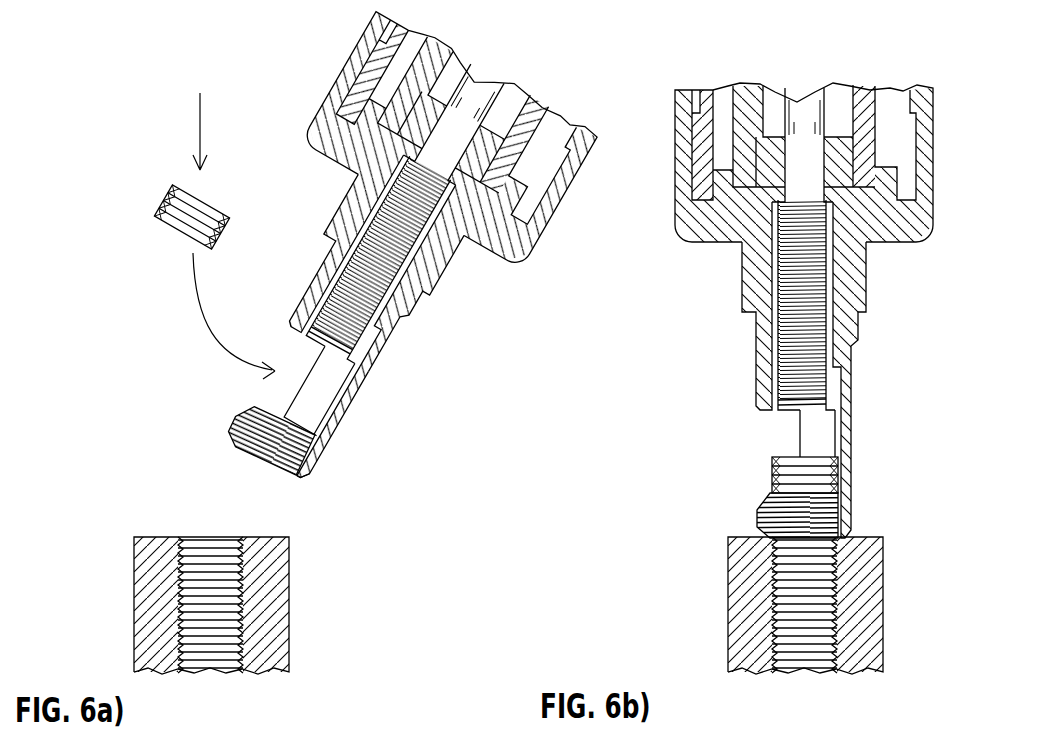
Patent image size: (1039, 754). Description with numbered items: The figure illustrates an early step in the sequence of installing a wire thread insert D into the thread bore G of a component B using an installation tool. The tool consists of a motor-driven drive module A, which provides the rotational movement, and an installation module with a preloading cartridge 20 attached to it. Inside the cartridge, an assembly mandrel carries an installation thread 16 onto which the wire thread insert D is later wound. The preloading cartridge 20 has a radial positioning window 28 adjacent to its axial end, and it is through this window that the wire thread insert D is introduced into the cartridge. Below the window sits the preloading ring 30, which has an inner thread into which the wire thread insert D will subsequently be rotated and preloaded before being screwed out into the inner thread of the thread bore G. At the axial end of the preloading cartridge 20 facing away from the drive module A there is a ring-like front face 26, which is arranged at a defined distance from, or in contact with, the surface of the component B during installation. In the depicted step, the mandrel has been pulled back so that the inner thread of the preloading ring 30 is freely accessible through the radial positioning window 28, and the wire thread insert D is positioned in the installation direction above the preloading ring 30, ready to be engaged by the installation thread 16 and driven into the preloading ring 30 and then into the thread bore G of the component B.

In FIG. 6a, the drive module A is at (560, 187).
In FIG. 6b, the drive module A is at (685, 170).
In FIG. 6a, the preloading cartridge 20 is at (430, 262).
In FIG. 6b, the preloading cartridge 20 is at (748, 293).
In FIG. 6b, the installation thread 16 is at (783, 330).
In FIG. 6a, the radial positioning window 28 is at (283, 390).
In FIG. 6b, the radial positioning window 28 is at (797, 433).
In FIG. 6a, the wire thread insert D is at (163, 205).
In FIG. 6b, the wire thread insert D is at (775, 465).
In FIG. 6a, the preloading ring 30 is at (230, 420).
In FIG. 6b, the preloading ring 30 is at (760, 510).
In FIG. 6a, the front face 26 is at (283, 471).
In FIG. 6a, the component B is at (270, 568).
In FIG. 6b, the component B is at (753, 570).
In FIG. 6a, the thread bore G is at (225, 614).
In FIG. 6b, the thread bore G is at (793, 617).